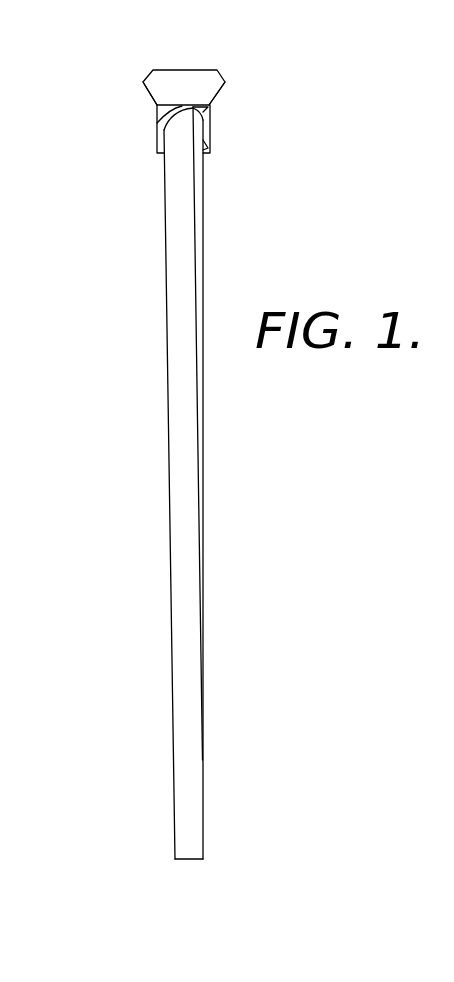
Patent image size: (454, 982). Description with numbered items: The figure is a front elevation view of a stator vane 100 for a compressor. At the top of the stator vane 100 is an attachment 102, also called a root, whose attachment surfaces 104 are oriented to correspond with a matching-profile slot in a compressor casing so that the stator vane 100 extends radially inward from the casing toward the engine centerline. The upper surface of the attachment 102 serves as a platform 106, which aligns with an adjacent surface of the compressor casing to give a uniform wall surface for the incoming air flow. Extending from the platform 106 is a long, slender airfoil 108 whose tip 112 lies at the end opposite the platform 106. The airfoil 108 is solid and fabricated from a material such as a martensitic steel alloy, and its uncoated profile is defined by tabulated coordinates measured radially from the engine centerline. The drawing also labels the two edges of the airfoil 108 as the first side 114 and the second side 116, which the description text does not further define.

The fastener assembly 100 is at (113, 198).
The head 102 is at (189, 75).
The beveled head surfaces 104 is at (150, 94).
The collar 106 is at (211, 116).
The shank 108 is at (182, 257).
The tip end 112 is at (188, 860).
The first side of shank 114 is at (168, 390).
The second side of shank 116 is at (203, 450).